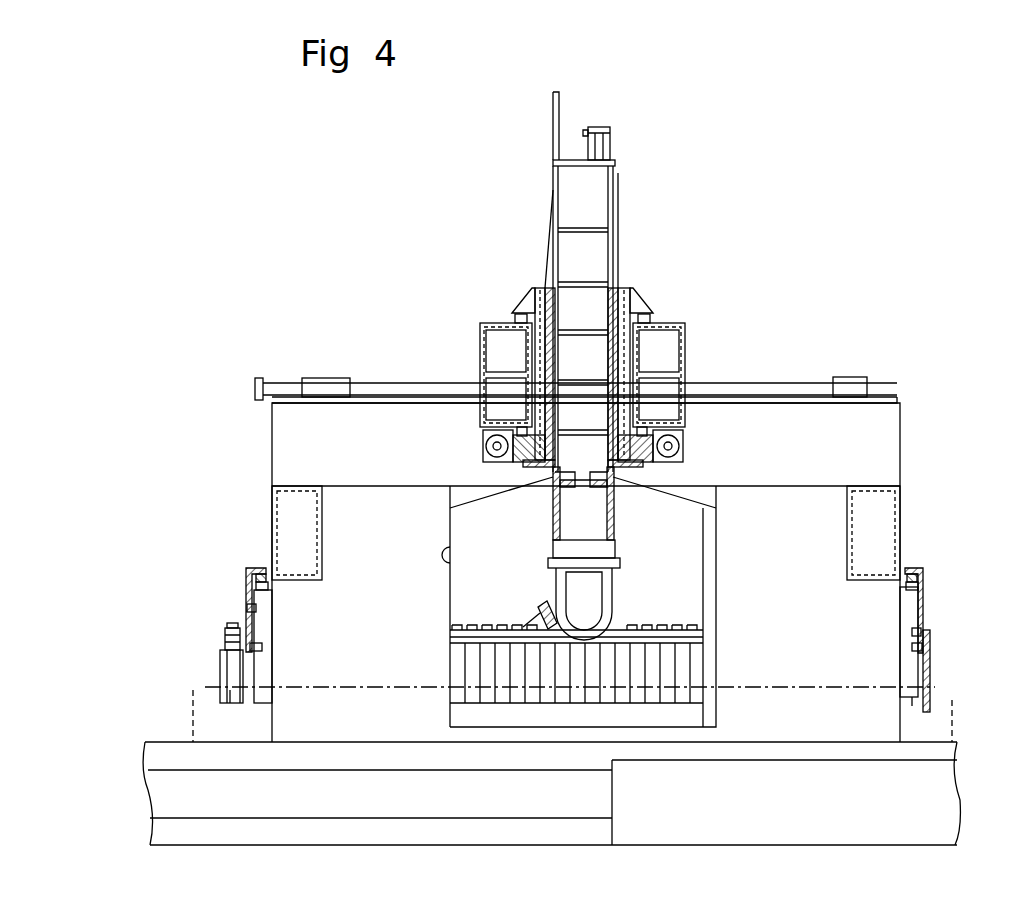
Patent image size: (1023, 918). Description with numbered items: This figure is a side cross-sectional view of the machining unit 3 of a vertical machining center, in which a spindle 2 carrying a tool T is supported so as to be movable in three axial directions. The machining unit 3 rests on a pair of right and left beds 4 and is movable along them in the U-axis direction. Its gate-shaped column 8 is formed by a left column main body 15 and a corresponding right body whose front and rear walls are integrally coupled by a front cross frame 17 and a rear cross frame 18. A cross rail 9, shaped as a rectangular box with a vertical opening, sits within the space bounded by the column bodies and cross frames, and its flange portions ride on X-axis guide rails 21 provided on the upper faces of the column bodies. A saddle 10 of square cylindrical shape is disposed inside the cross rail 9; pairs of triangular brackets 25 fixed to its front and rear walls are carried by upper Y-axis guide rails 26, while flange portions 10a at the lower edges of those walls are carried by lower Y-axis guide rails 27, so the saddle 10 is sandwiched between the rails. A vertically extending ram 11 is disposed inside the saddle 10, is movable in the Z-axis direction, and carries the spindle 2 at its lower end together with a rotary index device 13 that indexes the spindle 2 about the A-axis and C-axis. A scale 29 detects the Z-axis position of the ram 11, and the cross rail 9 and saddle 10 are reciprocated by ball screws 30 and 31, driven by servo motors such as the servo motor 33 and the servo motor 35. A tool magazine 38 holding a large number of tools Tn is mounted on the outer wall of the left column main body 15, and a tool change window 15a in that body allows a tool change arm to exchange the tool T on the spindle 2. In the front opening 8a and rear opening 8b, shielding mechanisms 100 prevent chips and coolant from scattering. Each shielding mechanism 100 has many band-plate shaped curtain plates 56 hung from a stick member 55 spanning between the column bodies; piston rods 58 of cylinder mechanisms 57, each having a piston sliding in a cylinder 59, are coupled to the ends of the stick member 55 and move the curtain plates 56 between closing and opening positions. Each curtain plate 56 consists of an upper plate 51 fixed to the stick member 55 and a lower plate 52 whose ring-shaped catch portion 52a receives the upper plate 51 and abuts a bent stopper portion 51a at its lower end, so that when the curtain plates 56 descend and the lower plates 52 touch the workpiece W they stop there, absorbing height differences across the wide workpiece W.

The spindle 2 is at (542, 606).
The machining unit 3 is at (257, 373).
The bed 4 is at (186, 740).
The gate-shaped column 8 is at (896, 377).
The front opening 8a is at (328, 585).
The rear opening 8b is at (855, 585).
The cross rail 9 is at (478, 338).
The saddle 10 is at (630, 292).
The flange portion 10a is at (645, 465).
The ram 11 is at (618, 505).
The rotary index device 13 is at (620, 597).
The left column main body 15 is at (268, 447).
The tool change window 15a is at (450, 552).
The front cross frame 17 is at (325, 572).
The rear cross frame 18 is at (842, 572).
The X-axis guide rail 21 is at (421, 395).
The triangular bracket 25 is at (520, 286).
The Y-axis guide rail 26 is at (512, 312).
The Y-axis guide rail 27 is at (482, 428).
The scale 29 is at (560, 98).
The ball screw 30 is at (382, 383).
The ball screw 31 is at (483, 450).
The servo motor 33 is at (290, 378).
The servo motor 35 is at (612, 140).
The tool magazine 38 is at (218, 634).
The upper plate 51 is at (247, 585).
The stopper portion 51a is at (262, 649).
The lower plate 52 is at (238, 664).
The catch portion 52a is at (262, 612).
The stick member 55 is at (262, 571).
The curtain plate 56 is at (212, 575).
The cylinder mechanism 57 is at (260, 707).
The piston rod 58 is at (268, 583).
The cylinder 59 is at (232, 694).
The shielding mechanism 100 is at (935, 548).
The tool T is at (523, 626).
The tools Tn is at (536, 712).
The workpiece W is at (335, 687).